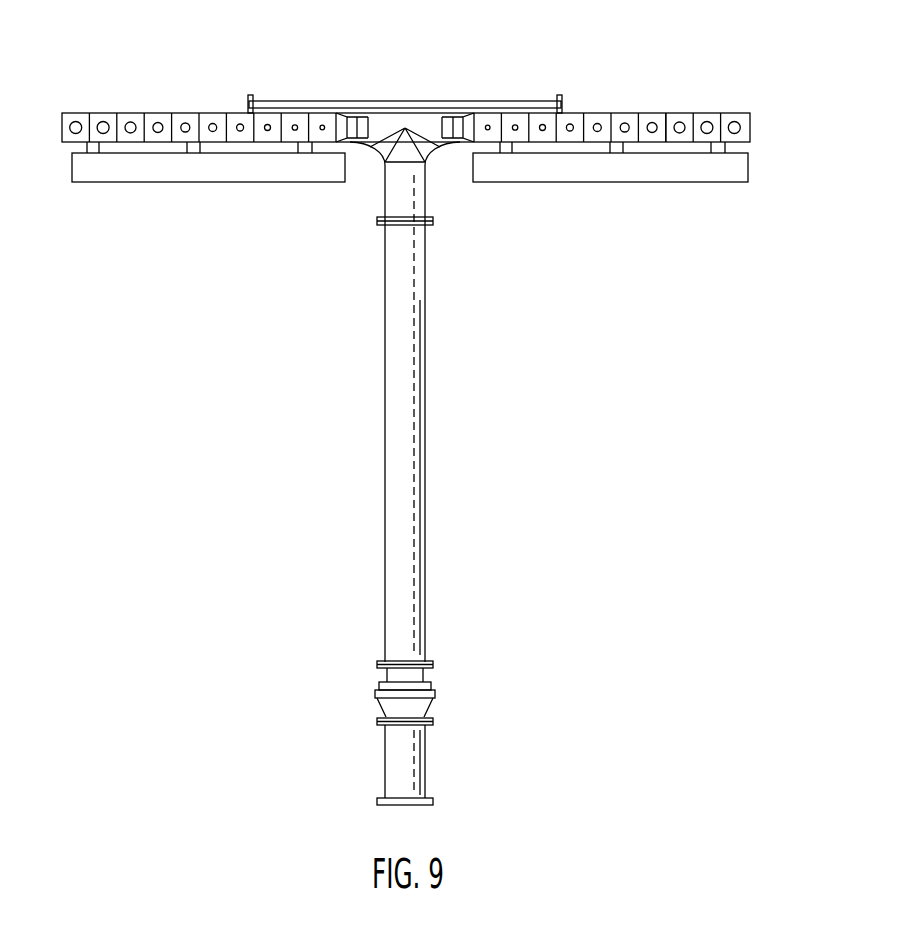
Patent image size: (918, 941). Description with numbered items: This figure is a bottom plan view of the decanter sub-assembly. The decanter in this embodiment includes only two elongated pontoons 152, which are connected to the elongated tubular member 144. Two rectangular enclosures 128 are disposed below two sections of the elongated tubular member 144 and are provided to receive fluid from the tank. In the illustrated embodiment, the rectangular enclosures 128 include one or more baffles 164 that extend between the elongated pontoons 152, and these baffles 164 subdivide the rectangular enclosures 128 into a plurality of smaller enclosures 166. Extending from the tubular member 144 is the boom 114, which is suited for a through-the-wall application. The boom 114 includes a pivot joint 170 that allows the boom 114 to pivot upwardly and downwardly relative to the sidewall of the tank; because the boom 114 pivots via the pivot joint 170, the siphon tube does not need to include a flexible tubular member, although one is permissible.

The rectangular enclosure 128 is at (636, 110).
The baffle 164 is at (728, 117).
The enclosure 166 is at (669, 134).
The elongated pontoon 152 is at (95, 168).
The elongated tubular member 144 is at (449, 155).
The boom 114 is at (418, 431).
The pivot joint 170 is at (420, 702).